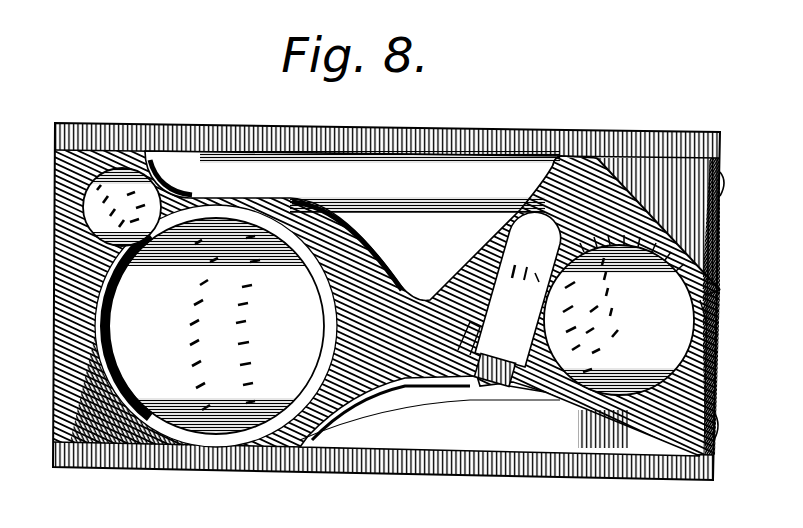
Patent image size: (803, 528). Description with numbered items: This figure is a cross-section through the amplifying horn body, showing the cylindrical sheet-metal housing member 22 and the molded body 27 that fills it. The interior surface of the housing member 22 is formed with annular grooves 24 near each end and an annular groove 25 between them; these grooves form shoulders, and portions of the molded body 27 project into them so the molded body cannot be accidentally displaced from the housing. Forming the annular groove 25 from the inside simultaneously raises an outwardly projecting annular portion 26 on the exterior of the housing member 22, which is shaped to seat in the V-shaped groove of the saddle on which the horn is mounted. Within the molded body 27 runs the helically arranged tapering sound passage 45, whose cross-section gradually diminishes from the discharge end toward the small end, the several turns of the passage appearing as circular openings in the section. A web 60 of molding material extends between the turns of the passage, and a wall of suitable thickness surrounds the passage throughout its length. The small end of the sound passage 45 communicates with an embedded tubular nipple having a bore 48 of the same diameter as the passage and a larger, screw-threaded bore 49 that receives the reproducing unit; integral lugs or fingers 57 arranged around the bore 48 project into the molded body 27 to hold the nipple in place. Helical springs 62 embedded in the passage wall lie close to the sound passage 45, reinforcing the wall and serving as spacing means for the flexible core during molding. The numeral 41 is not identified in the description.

The housing member 22 is at (722, 232).
The annular grooves 24 is at (724, 186).
The annular groove 25 is at (708, 312).
The outwardly projecting annular portion 26 is at (722, 300).
The molded body 27 is at (586, 158).
The valve chamber 41 is at (545, 372).
The sound passage 45 is at (83, 207).
The bore 48 is at (472, 372).
The bore 49 is at (500, 388).
The lugs or fingers 57 is at (438, 368).
The web 60 is at (305, 212).
The helical springs 62 is at (108, 194).